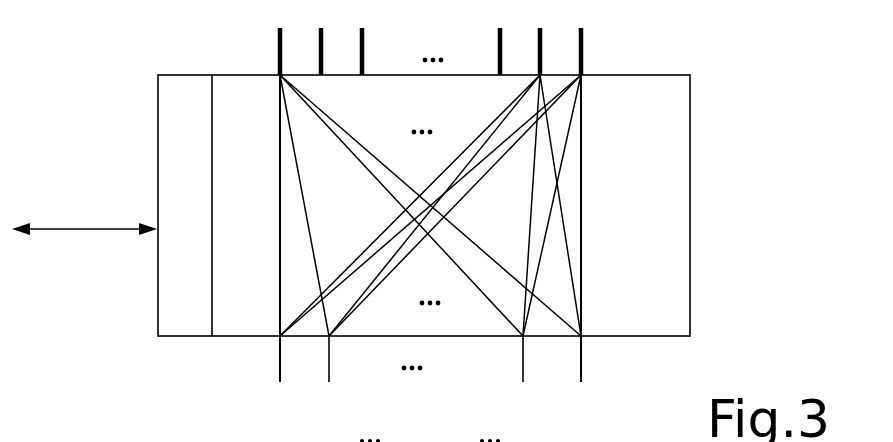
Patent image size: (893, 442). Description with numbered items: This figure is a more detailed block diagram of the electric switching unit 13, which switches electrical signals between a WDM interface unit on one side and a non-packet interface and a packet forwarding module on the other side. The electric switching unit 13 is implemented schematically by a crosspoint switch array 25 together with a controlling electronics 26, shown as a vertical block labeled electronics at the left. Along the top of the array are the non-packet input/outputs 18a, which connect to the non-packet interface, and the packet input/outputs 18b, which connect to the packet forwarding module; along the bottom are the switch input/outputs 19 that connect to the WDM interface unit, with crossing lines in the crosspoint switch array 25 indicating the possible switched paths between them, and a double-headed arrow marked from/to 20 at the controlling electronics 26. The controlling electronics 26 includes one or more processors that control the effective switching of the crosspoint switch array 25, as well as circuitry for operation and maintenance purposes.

The electric switching unit 13 is at (423, 229).
The non-packet input/outputs 18a is at (280, 56).
The packet input/outputs 18b is at (583, 53).
The switch input/outputs 19 is at (280, 382).
The particles / sample 20 is at (430, 426).
The crosspoint switch array 25 is at (668, 254).
The controlling electronics 26 is at (158, 112).